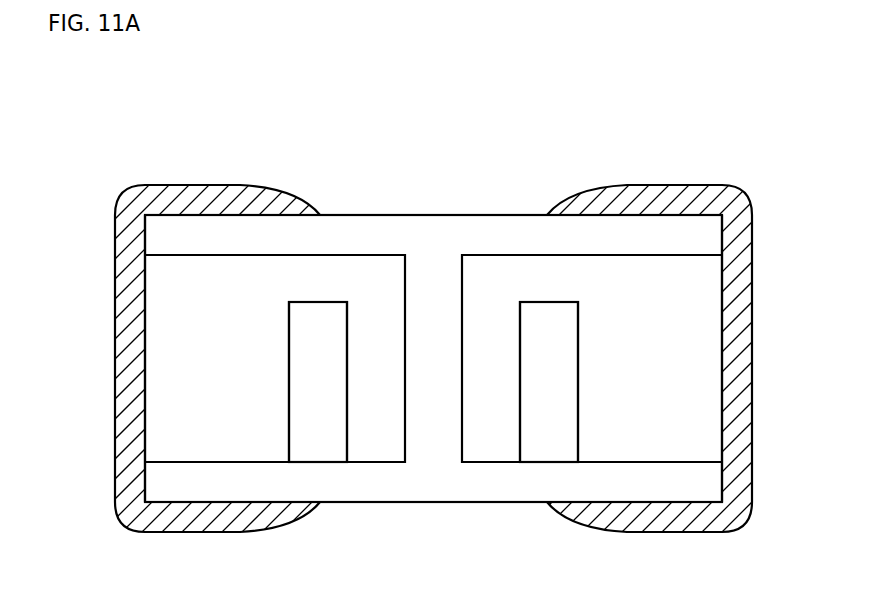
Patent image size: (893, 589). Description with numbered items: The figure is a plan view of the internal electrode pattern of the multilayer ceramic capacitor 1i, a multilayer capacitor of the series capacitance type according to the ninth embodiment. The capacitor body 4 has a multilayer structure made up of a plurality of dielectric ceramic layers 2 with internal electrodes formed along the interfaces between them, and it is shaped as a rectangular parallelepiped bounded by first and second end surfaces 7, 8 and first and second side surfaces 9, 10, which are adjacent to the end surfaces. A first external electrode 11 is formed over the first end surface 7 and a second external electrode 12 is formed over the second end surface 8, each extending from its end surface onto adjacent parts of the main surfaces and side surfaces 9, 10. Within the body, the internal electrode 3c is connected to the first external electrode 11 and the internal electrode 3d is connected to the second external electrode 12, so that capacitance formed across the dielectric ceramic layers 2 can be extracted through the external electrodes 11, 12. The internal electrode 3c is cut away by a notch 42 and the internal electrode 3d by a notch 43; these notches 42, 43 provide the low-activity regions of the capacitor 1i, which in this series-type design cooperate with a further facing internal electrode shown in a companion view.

The multilayer ceramic capacitor 1i is at (138, 113).
The dielectric ceramic layer 2 is at (715, 230).
The internal electrode 3c is at (345, 255).
The internal electrode 3d is at (485, 255).
The capacitor body 4 is at (524, 215).
The first end surface 7 is at (143, 405).
The second end surface 8 is at (725, 350).
The first side surface 9 is at (386, 215).
The second side surface 10 is at (433, 502).
The first external electrode 11 is at (117, 330).
The second external electrode 12 is at (745, 308).
The notch 42 is at (323, 436).
The notch 43 is at (545, 439).